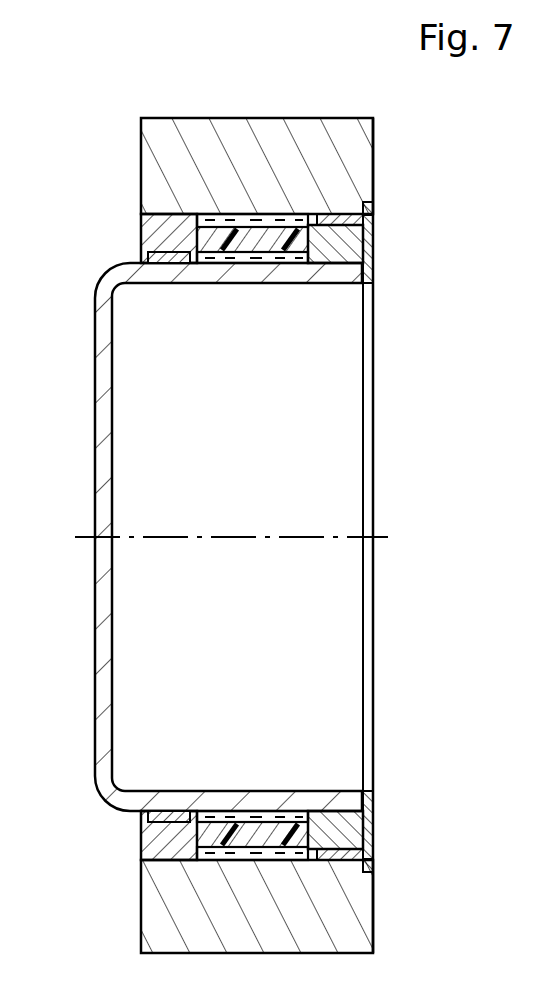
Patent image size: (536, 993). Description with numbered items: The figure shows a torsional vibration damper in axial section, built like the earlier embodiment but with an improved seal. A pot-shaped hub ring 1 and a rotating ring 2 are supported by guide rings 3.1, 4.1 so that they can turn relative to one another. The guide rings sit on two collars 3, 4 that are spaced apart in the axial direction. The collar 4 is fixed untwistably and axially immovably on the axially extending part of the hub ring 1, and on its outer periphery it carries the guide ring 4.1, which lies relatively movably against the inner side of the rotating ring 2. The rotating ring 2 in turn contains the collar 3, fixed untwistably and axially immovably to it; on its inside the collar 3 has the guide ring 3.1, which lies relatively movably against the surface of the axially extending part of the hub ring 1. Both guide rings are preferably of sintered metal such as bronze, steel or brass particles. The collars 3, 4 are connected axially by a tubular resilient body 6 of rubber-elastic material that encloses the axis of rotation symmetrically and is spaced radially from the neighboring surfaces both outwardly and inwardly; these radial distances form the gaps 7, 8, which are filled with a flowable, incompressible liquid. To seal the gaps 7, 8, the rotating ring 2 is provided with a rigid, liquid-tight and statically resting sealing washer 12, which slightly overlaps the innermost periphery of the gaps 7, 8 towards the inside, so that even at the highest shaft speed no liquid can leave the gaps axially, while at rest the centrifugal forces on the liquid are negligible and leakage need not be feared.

The hub ring 1 is at (108, 442).
The rotating ring 2 is at (175, 168).
The collar 3 is at (175, 228).
The guide ring 3.1 is at (172, 265).
The collar 4 is at (335, 242).
The guide ring 4.1 is at (348, 214).
The tubular resilient body 6 is at (247, 243).
The gap 7 is at (277, 227).
The gap 8 is at (293, 257).
The sealing washer 12 is at (370, 232).